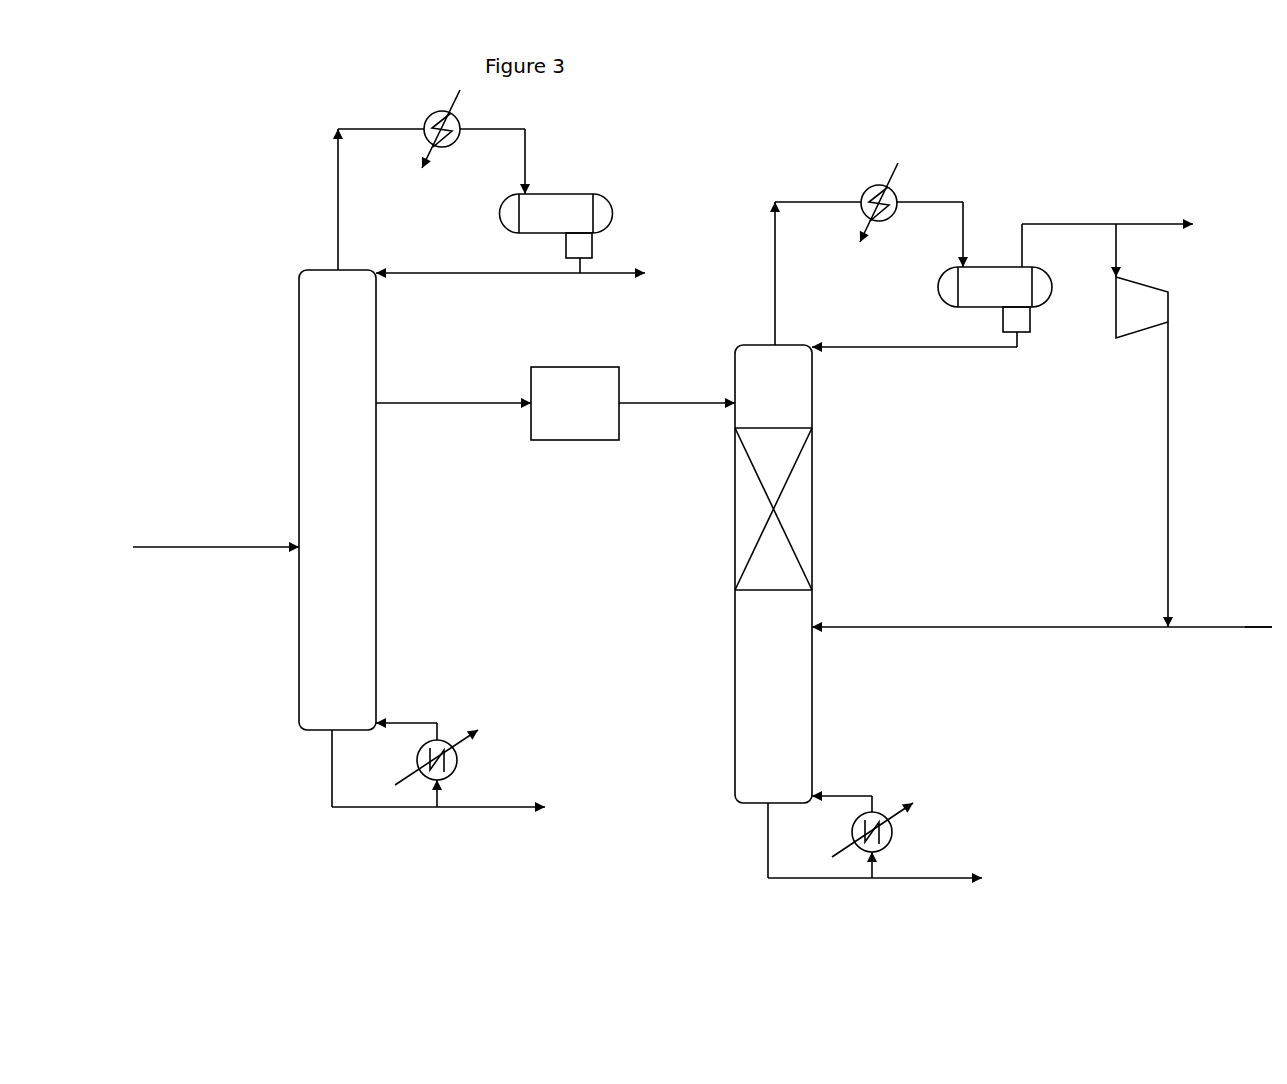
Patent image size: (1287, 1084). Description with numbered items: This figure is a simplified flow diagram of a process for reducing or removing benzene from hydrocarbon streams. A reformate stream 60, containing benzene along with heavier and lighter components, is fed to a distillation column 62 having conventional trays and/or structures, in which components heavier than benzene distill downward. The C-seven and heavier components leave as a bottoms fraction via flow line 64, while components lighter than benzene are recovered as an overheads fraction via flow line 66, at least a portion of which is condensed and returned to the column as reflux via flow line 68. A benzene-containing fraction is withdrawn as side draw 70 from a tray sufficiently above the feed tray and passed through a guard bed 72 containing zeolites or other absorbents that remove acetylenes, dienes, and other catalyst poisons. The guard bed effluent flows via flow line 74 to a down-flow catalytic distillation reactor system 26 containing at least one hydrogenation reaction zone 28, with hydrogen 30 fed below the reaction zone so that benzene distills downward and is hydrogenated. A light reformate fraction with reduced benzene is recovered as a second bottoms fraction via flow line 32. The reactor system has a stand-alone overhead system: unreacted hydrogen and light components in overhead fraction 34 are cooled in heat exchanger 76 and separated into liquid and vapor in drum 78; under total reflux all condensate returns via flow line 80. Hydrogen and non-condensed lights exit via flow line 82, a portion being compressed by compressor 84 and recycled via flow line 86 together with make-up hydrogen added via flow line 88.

The catalytic distillation reactor system 26 is at (735, 349).
The reaction zone 28 is at (750, 507).
The hydrogen 30 is at (901, 627).
The flow line 32 is at (937, 880).
The overhead fraction 34 is at (775, 296).
The reformate stream 60 is at (155, 543).
The distillation column 62 is at (300, 276).
The flow line 64 is at (500, 809).
The flow line 66 is at (338, 222).
The flow line 68 is at (462, 275).
The side draw 70 is at (392, 406).
The guard bed 72 is at (575, 403).
The flow line 74 is at (637, 405).
The heat exchanger 76 is at (870, 176).
The drum 78 is at (938, 286).
The flow line 80 is at (900, 347).
The flow line 82 is at (1022, 224).
The compressor 84 is at (1142, 307).
The flow line 86 is at (1166, 457).
The flow line 88 is at (1245, 626).